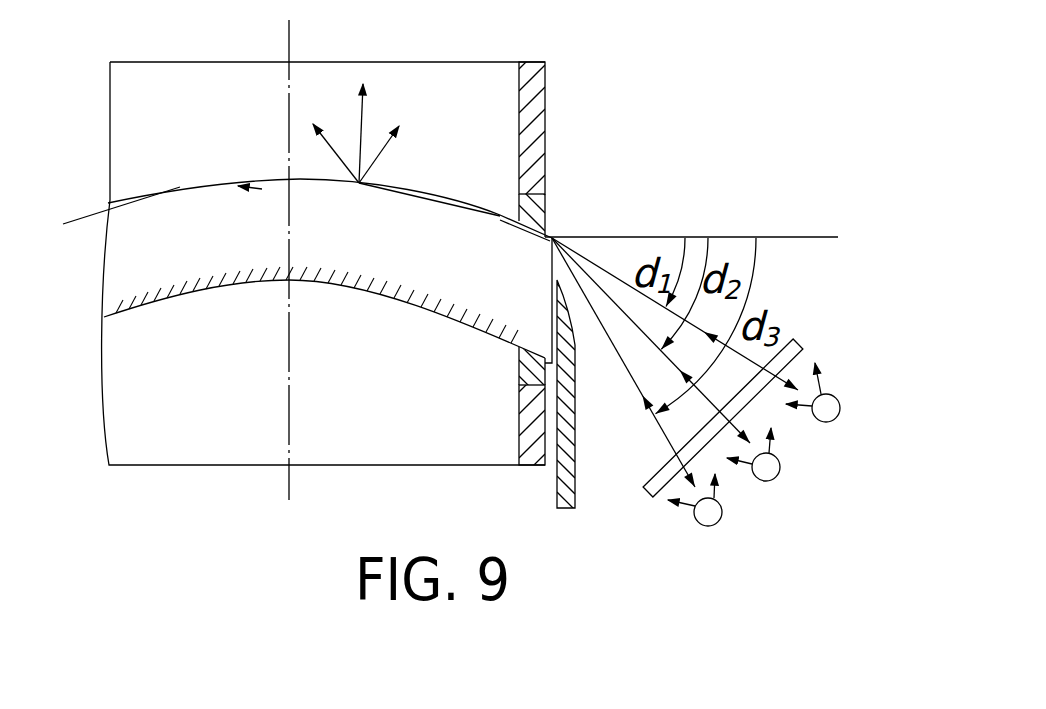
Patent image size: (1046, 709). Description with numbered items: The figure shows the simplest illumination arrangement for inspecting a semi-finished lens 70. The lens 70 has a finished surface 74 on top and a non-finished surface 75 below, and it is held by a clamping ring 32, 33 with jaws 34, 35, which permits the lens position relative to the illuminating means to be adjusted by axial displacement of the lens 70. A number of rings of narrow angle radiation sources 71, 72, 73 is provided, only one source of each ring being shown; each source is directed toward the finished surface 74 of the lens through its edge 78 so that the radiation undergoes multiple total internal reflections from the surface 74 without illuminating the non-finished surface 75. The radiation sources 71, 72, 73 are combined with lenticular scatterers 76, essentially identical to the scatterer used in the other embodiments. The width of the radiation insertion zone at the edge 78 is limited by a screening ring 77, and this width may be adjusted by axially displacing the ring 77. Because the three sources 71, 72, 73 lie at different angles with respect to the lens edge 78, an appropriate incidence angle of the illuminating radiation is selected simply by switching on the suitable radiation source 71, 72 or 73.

The semi-finished lens 70 is at (323, 263).
The finished surface 74 is at (307, 162).
The non-finished surface 75 is at (324, 326).
The edge 78 is at (496, 300).
The clamping ring 33 is at (580, 111).
The jaw 35 is at (580, 200).
The jaw 34 is at (479, 349).
The clamping ring 32 is at (489, 412).
The screening ring 77 is at (605, 413).
The lenticular scatterer 76 is at (772, 395).
The narrow angle radiation source 71 is at (743, 518).
The narrow angle radiation source 72 is at (801, 469).
The narrow angle radiation source 73 is at (855, 405).